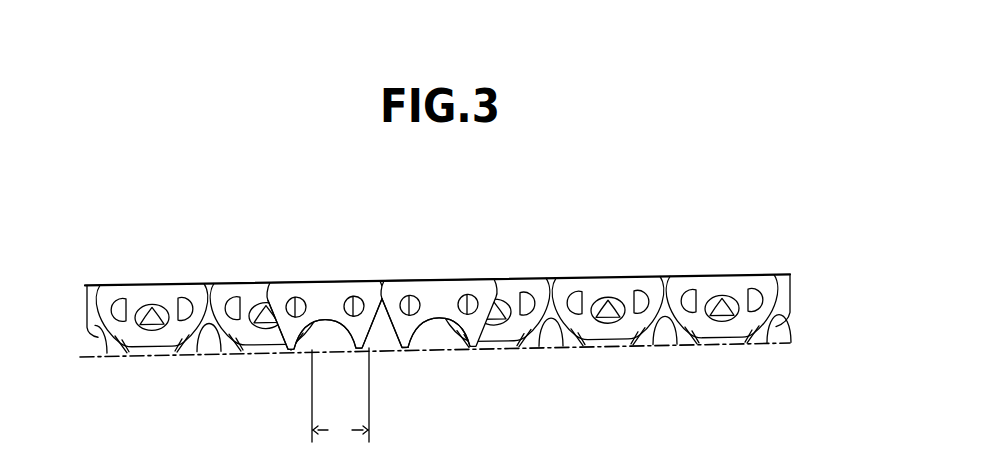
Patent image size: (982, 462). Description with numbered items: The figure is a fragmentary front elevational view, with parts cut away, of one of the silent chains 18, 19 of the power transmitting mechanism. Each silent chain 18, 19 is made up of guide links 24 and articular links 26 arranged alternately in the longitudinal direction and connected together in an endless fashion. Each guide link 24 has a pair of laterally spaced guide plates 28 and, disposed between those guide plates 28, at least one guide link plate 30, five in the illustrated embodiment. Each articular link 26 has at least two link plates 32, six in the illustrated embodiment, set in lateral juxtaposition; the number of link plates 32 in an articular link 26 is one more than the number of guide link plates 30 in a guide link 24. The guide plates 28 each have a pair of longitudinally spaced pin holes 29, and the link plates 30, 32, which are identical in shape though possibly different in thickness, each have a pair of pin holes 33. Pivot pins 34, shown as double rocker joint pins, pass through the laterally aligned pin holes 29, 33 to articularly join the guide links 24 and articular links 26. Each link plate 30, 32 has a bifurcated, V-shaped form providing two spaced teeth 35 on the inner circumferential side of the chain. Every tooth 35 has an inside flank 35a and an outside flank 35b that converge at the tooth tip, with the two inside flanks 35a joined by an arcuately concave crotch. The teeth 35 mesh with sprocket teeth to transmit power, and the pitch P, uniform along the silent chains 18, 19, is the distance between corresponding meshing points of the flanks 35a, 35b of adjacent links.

The silent chain 18 is at (439, 280).
The silent chain 19 is at (439, 280).
The guide link 24 is at (623, 278).
The articular link 26 is at (411, 262).
The guide plate 28 is at (623, 288).
The pin hole 29 is at (690, 289).
The guide link plate 30 is at (487, 281).
The link plate 32 is at (448, 291).
The pin hole 33 is at (354, 297).
The pivot pin 34 is at (294, 297).
The tooth 35 is at (289, 357).
The inside flank 35a is at (437, 352).
The outside flank 35b is at (398, 338).